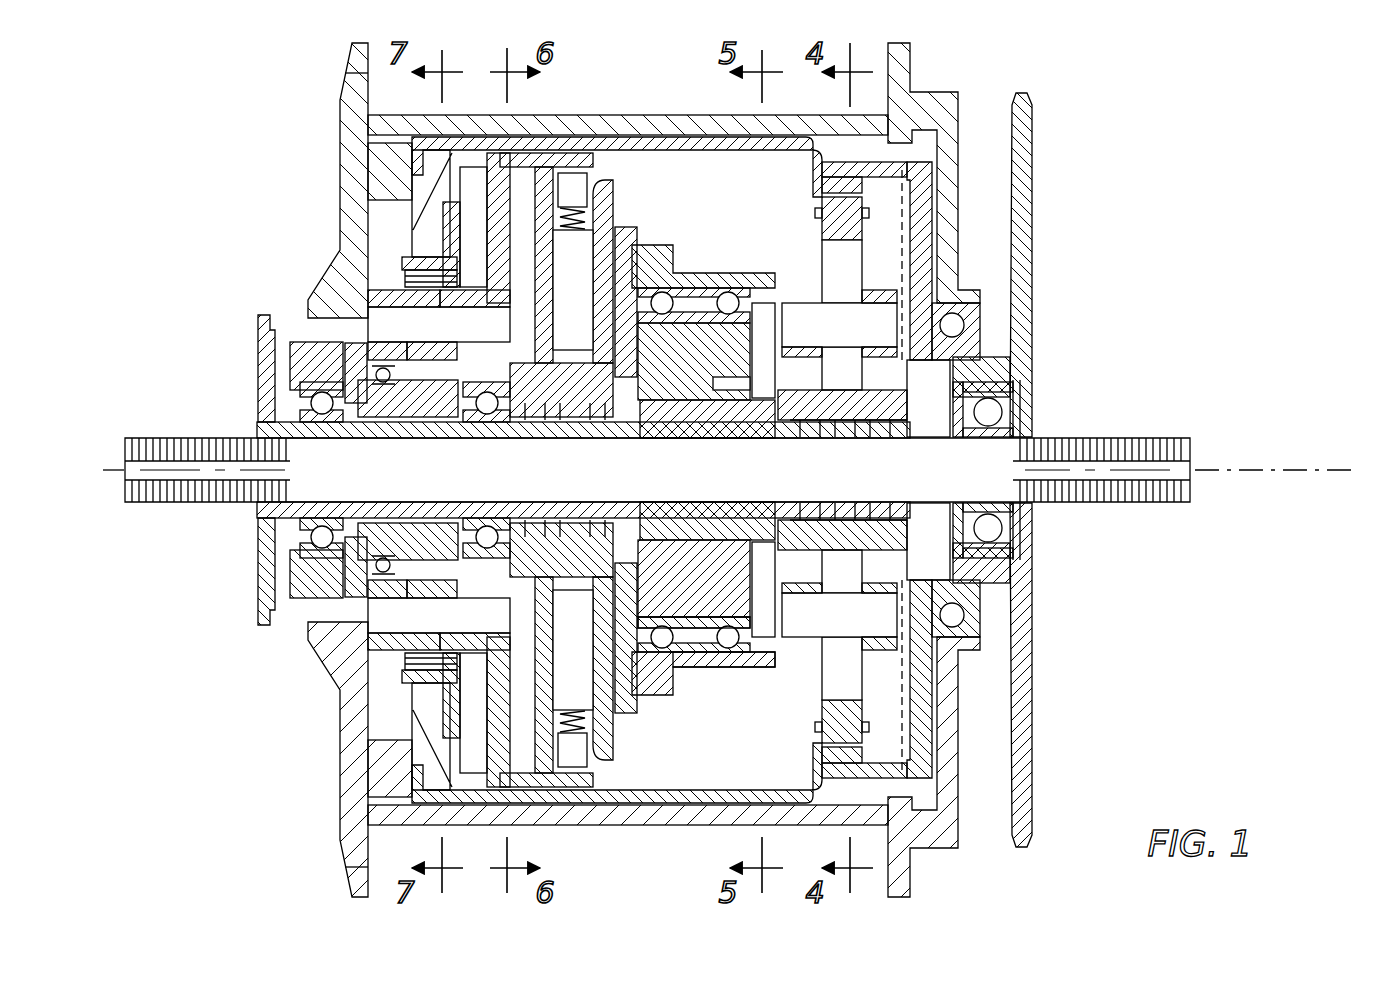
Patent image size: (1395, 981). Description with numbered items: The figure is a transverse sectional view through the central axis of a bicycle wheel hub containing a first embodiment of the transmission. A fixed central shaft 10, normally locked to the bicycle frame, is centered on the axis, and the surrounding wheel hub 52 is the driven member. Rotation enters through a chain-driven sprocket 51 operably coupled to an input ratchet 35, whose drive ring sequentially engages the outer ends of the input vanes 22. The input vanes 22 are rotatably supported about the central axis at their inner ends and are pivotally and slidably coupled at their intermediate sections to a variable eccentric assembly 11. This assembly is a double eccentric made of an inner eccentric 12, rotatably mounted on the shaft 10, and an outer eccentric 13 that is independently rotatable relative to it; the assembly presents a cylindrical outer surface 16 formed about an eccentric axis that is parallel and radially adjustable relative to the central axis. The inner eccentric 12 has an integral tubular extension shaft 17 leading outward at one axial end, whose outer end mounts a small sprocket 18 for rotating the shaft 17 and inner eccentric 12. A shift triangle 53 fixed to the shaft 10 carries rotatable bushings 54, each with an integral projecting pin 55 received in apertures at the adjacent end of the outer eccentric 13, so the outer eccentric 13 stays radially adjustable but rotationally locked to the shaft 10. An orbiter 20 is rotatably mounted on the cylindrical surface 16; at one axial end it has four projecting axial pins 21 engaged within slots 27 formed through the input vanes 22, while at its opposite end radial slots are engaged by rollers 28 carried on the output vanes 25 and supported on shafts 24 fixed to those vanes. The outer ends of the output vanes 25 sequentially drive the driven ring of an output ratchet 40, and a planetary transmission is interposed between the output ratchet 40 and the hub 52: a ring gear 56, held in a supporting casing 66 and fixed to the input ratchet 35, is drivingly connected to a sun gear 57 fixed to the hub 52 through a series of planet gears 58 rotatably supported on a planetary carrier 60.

The central shaft 10 is at (1172, 467).
The variable eccentric assembly 11 is at (696, 300).
The inner eccentric 12 is at (690, 535).
The outer eccentric 13 is at (762, 668).
The cylindrical outer surface 16 is at (705, 632).
The tubular extension shaft 17 is at (565, 505).
The small sprocket 18 is at (265, 578).
The orbiter 20 is at (690, 262).
The axial pins 21 is at (838, 322).
The input vanes 22 is at (818, 225).
The shafts 24 is at (612, 222).
The output vanes 25 is at (605, 190).
The slots 27 is at (850, 283).
The rollers 28 is at (585, 298).
The input ratchet 35 is at (831, 162).
The output ratchet 40 is at (573, 158).
The sprocket 51 is at (1022, 715).
The wheel hub 52 is at (898, 56).
The shift triangle 53 is at (768, 330).
The bushings 54 is at (755, 360).
The projecting pin 55 is at (728, 391).
The ring gear 56 is at (433, 247).
The sun gear 57 is at (430, 401).
The planet gears 58 is at (413, 301).
The planetary carrier 60 is at (476, 301).
The supporting casing 66 is at (420, 186).